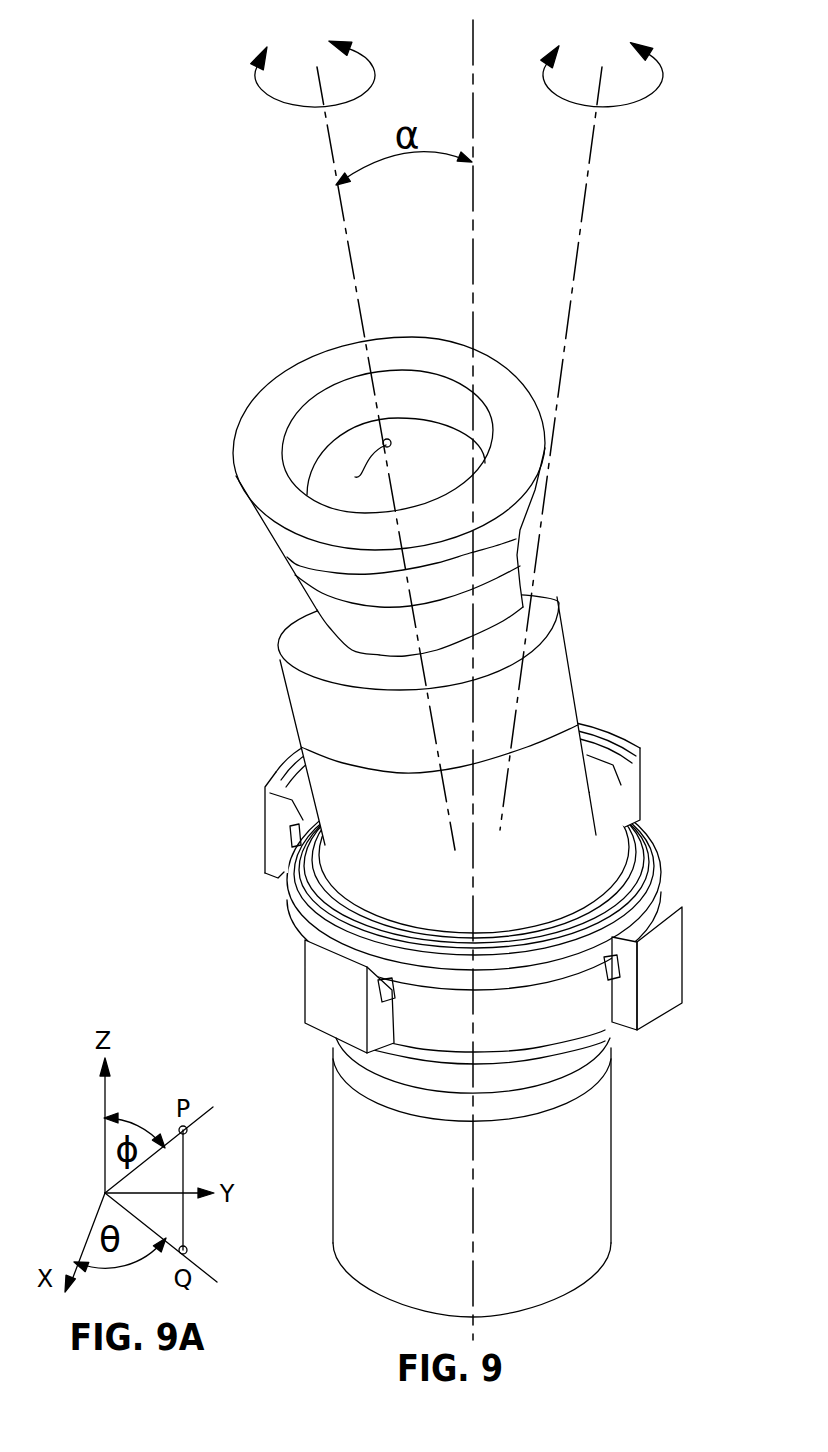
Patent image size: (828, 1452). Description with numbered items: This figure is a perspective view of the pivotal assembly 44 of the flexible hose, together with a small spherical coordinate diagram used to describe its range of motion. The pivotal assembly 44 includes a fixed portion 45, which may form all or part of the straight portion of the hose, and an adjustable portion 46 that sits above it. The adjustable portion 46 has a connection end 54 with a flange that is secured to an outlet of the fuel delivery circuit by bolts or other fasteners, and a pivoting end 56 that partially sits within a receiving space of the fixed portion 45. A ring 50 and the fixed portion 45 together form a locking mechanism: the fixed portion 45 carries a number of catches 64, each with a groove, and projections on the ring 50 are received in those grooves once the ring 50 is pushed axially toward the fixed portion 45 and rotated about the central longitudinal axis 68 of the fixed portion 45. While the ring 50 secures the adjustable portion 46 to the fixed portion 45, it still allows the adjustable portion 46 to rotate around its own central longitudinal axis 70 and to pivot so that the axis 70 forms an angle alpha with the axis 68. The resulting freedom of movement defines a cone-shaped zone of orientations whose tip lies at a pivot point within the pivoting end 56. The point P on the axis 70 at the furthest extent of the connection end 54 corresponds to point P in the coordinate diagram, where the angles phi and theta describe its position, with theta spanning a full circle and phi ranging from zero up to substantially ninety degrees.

The pivotal assembly 44 is at (488, 827).
The fixed portion 45 is at (614, 1172).
The adjustable portion 46 is at (302, 752).
The ring 50 is at (293, 908).
The connection end 54 is at (262, 422).
The pivoting end 56 is at (603, 900).
The catch 64 is at (268, 852).
The central longitudinal axis 68 is at (474, 104).
The central longitudinal axis 70 is at (592, 166).